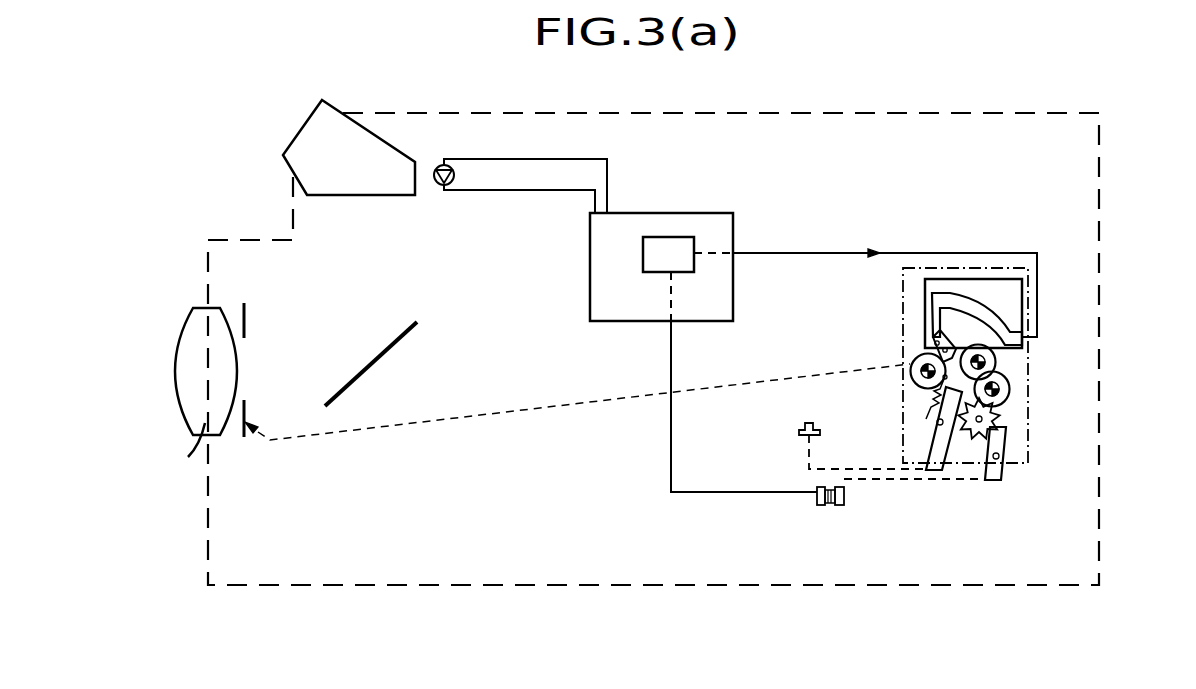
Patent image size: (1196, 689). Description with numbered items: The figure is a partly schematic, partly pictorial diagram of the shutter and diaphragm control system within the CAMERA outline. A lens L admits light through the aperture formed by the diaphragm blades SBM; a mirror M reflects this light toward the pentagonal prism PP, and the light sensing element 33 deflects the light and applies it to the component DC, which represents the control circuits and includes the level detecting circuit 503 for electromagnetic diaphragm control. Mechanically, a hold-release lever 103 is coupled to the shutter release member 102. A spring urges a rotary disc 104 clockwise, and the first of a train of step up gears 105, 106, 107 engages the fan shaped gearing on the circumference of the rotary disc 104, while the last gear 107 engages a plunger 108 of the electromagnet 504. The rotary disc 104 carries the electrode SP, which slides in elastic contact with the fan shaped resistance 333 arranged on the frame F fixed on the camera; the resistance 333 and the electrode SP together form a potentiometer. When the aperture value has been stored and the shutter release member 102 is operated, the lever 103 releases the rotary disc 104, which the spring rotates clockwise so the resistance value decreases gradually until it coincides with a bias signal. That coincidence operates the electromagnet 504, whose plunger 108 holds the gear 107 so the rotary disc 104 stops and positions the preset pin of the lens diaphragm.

The light sensing element 33 is at (440, 165).
The level detecting circuit 503 is at (678, 240).
The shutter release member 102 is at (809, 423).
The hold-release lever 103 is at (938, 447).
The rotary disc 104 is at (918, 373).
The step up gear 105 is at (1002, 363).
The step up gear 106 is at (1013, 388).
The step up gear 107 is at (1002, 413).
The plunger 108 is at (1002, 443).
The fan shaped resistance 333 is at (1015, 308).
The electromagnet 504 is at (822, 508).
The pentagonal prism PP is at (365, 142).
The component DC is at (600, 263).
The electrode SP is at (932, 322).
The frame F is at (947, 270).
The mirror M is at (378, 360).
The diaphragm blades SBM is at (244, 410).
The camera body CAMERA is at (1100, 162).
The lens L is at (206, 382).